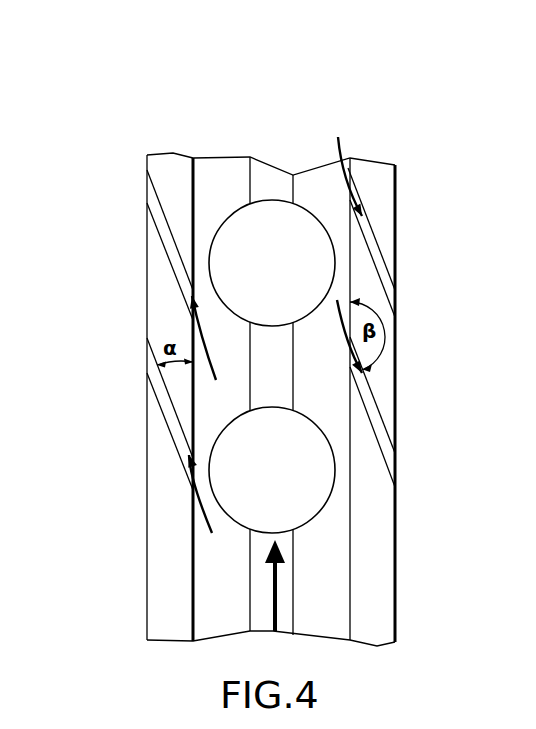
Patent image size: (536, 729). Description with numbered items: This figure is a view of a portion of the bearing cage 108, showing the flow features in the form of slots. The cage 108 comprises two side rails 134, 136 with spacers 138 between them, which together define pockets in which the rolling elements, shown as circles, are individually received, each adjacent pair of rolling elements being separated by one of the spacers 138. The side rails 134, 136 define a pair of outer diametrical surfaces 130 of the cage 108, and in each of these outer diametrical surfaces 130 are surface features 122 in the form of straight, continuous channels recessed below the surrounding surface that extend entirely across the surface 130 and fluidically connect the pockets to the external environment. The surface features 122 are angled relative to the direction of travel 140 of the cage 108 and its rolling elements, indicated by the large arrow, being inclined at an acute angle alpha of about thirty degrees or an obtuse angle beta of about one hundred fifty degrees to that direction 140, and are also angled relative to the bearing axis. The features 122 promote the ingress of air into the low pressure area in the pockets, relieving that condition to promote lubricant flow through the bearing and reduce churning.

The cage 108 is at (138, 133).
The surface features 122 is at (158, 213).
The outer diametrical surfaces 130 is at (153, 511).
The side rail 134 is at (147, 293).
The side rail 136 is at (397, 375).
The spacers 138 is at (270, 177).
The direction of travel 140 is at (277, 634).